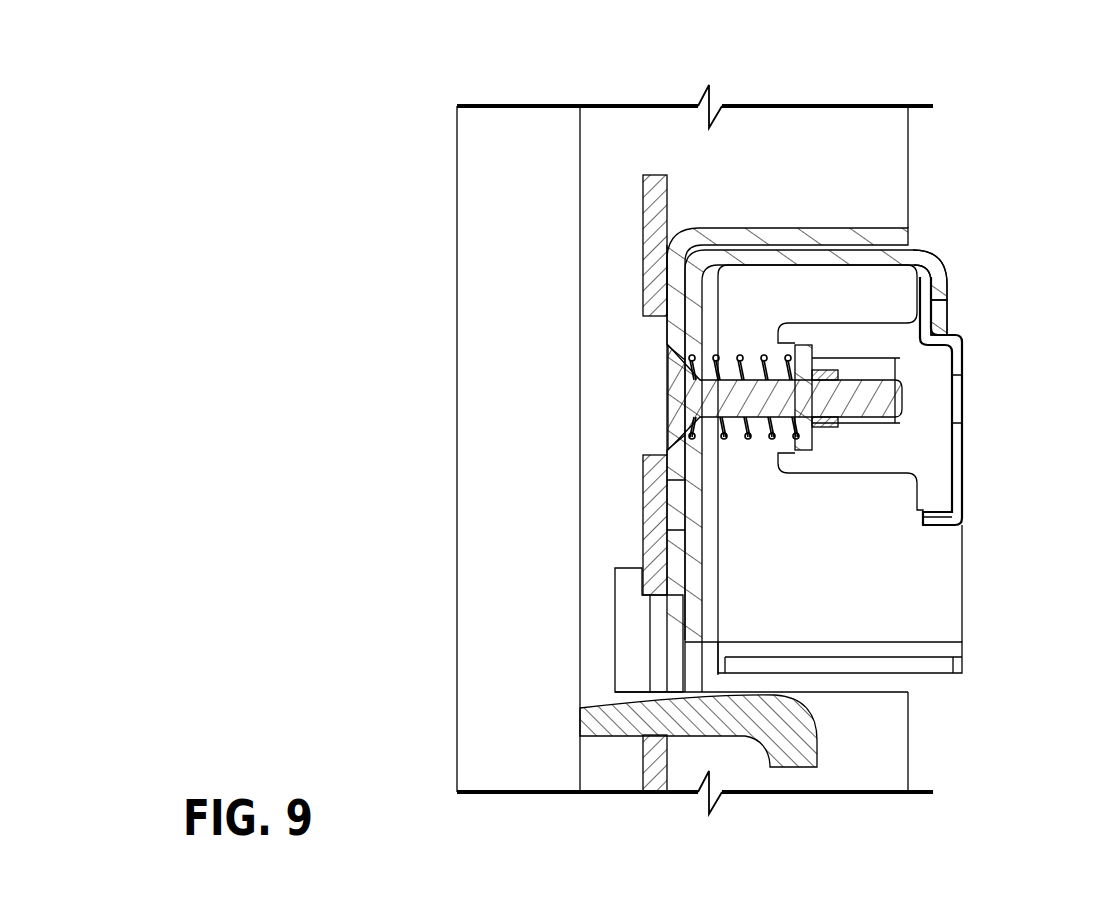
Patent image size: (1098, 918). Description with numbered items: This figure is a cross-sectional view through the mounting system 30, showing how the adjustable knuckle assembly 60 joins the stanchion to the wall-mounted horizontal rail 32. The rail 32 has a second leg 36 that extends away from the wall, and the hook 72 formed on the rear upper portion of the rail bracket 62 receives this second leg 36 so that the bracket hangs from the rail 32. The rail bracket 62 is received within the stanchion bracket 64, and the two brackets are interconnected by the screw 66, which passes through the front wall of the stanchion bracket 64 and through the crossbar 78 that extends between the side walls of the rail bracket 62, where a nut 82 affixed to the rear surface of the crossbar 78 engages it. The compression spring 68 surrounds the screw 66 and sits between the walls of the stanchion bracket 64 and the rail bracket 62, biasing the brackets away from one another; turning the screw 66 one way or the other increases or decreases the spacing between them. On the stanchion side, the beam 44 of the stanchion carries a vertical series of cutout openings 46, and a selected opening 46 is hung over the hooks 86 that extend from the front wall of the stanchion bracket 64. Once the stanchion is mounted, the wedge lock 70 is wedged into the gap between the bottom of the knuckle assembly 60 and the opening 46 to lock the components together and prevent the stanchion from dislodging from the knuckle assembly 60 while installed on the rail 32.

The mounting system 30 is at (937, 233).
The horizontal rail 32 is at (970, 458).
The second leg 36 is at (932, 317).
The beam 44 is at (643, 232).
The cutout openings 46 is at (658, 416).
The knuckle assembly 60 is at (813, 226).
The rail bracket 62 is at (915, 240).
The stanchion bracket 64 is at (730, 228).
The screw 66 is at (665, 386).
The compression spring 68 is at (722, 438).
The wedge lock 70 is at (800, 738).
The hook 72 is at (948, 277).
The crossbar 78 is at (820, 358).
The nut 82 is at (820, 425).
The hooks 86 is at (615, 620).